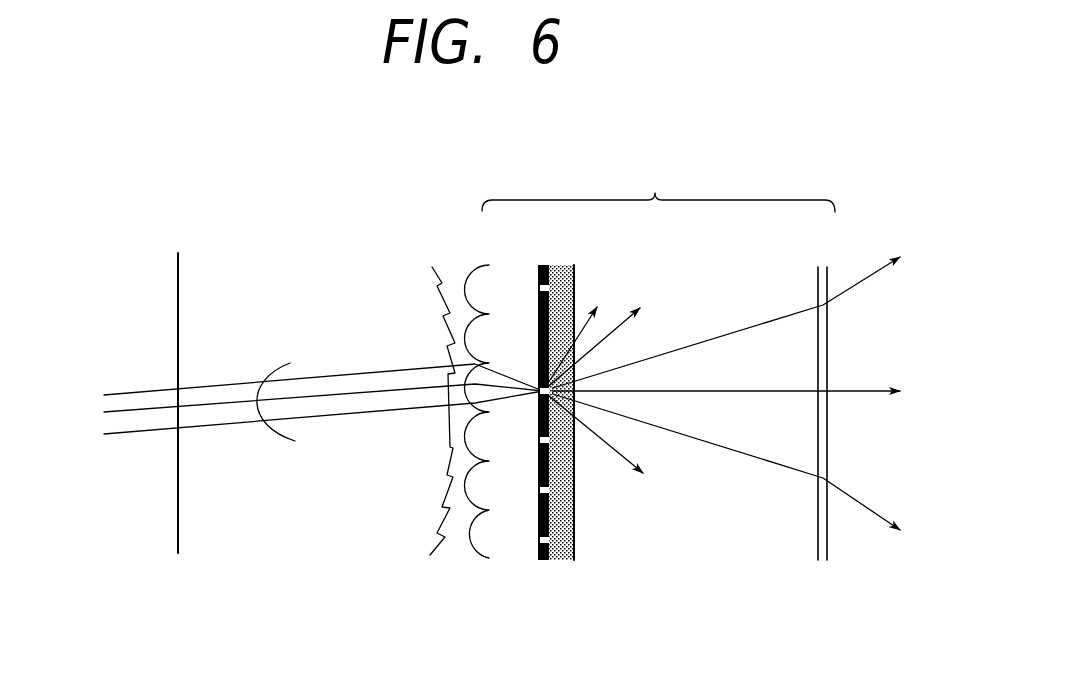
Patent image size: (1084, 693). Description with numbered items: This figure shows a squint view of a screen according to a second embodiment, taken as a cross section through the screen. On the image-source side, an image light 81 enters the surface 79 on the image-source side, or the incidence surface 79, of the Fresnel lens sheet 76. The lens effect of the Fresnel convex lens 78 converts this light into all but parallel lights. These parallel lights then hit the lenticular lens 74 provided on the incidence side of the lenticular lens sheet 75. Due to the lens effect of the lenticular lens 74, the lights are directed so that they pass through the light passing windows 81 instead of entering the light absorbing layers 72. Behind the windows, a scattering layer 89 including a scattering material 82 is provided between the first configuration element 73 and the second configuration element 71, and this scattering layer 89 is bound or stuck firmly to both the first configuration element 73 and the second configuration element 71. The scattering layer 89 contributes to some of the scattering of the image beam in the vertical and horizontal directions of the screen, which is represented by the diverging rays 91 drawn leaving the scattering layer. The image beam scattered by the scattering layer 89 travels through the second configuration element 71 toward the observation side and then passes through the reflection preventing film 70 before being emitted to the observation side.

The reflection preventing film 70 is at (829, 552).
The second configuration element 71 is at (695, 552).
The light absorbing layer 72 is at (537, 556).
The first configuration element 73 is at (515, 274).
The lenticular lens 74 is at (472, 562).
The lenticular lens sheet 75 is at (658, 184).
The Fresnel lens sheet 76 is at (291, 540).
The Fresnel convex lens 78 is at (434, 522).
The incidence surface 79 is at (177, 522).
The image light / light passing window 81 is at (262, 358).
The scattering material 82 is at (562, 559).
The scattering layer 89 is at (563, 264).
The light beam 91 is at (735, 288).